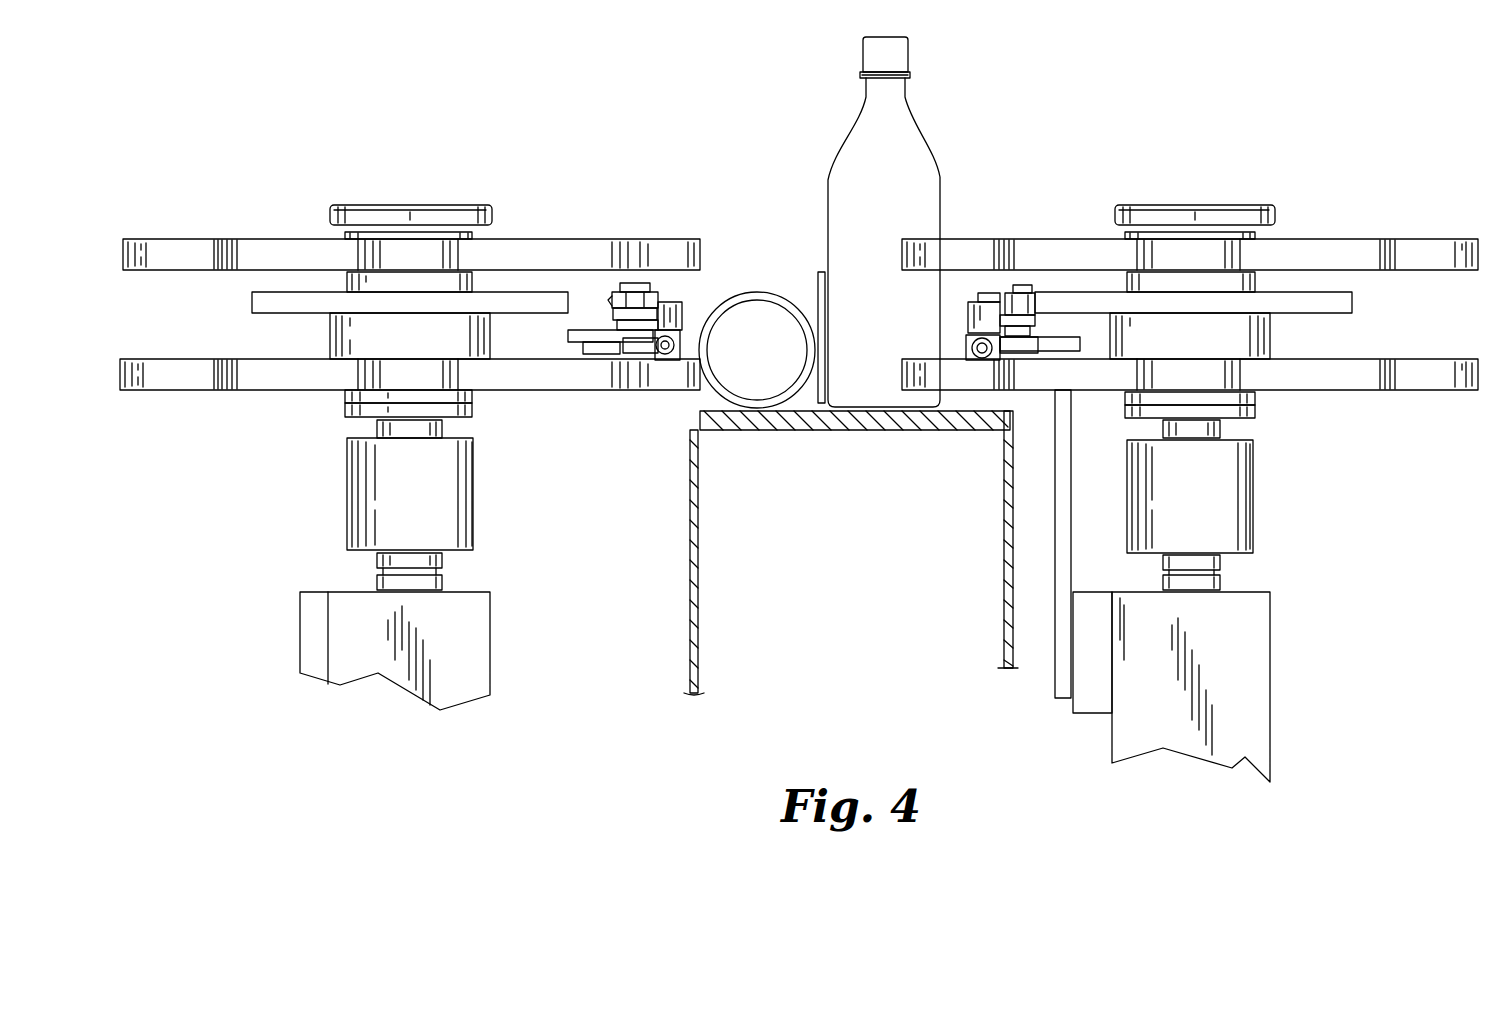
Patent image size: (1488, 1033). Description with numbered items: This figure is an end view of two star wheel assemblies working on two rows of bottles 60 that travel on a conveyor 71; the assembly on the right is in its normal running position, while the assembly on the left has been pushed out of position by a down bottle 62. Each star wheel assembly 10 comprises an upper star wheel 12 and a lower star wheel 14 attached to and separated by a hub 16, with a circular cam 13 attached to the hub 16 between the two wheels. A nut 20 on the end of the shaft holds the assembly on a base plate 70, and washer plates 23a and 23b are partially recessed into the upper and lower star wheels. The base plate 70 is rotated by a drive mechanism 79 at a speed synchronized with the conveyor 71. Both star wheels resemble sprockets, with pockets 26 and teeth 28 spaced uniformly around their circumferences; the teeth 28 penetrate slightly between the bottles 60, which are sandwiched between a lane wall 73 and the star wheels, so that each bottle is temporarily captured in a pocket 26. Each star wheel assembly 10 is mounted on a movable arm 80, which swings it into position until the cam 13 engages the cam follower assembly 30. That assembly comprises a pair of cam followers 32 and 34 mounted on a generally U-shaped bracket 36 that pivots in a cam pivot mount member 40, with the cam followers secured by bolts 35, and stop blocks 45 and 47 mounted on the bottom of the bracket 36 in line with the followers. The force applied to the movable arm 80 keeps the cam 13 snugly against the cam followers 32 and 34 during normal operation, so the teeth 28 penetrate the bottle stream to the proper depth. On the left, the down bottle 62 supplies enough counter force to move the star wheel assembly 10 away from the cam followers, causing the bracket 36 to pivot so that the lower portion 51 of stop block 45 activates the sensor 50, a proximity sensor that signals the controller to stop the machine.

The star wheel assembly 10 is at (511, 150).
The upper star wheel 12 is at (594, 238).
The cam 13 is at (248, 300).
The lower star wheel 14 is at (156, 358).
The hub 16 is at (492, 346).
The nut 20 is at (430, 208).
The upper washer plate 23a is at (345, 236).
The lower washer plate 23b is at (345, 396).
The pockets 26 is at (162, 248).
The teeth 28 is at (214, 245).
The cam follower assembly 30 is at (940, 323).
The cam follower 32 is at (670, 302).
The cam follower 34 is at (608, 302).
The bolts 35 is at (632, 283).
The bracket 36 is at (613, 318).
The cam pivot mount member 40 is at (686, 322).
The stop block 45 is at (1023, 380).
The stop block 47 is at (580, 333).
The sensor 50 is at (664, 360).
The lower portion of stop block 51 is at (632, 355).
The bottles 60 is at (901, 310).
The down bottle 62 is at (769, 362).
The base plate 70 is at (345, 418).
The conveyor 71 is at (868, 430).
The lane wall 73 is at (818, 290).
The drive mechanism 79 is at (474, 492).
The movable arm 80 is at (469, 657).